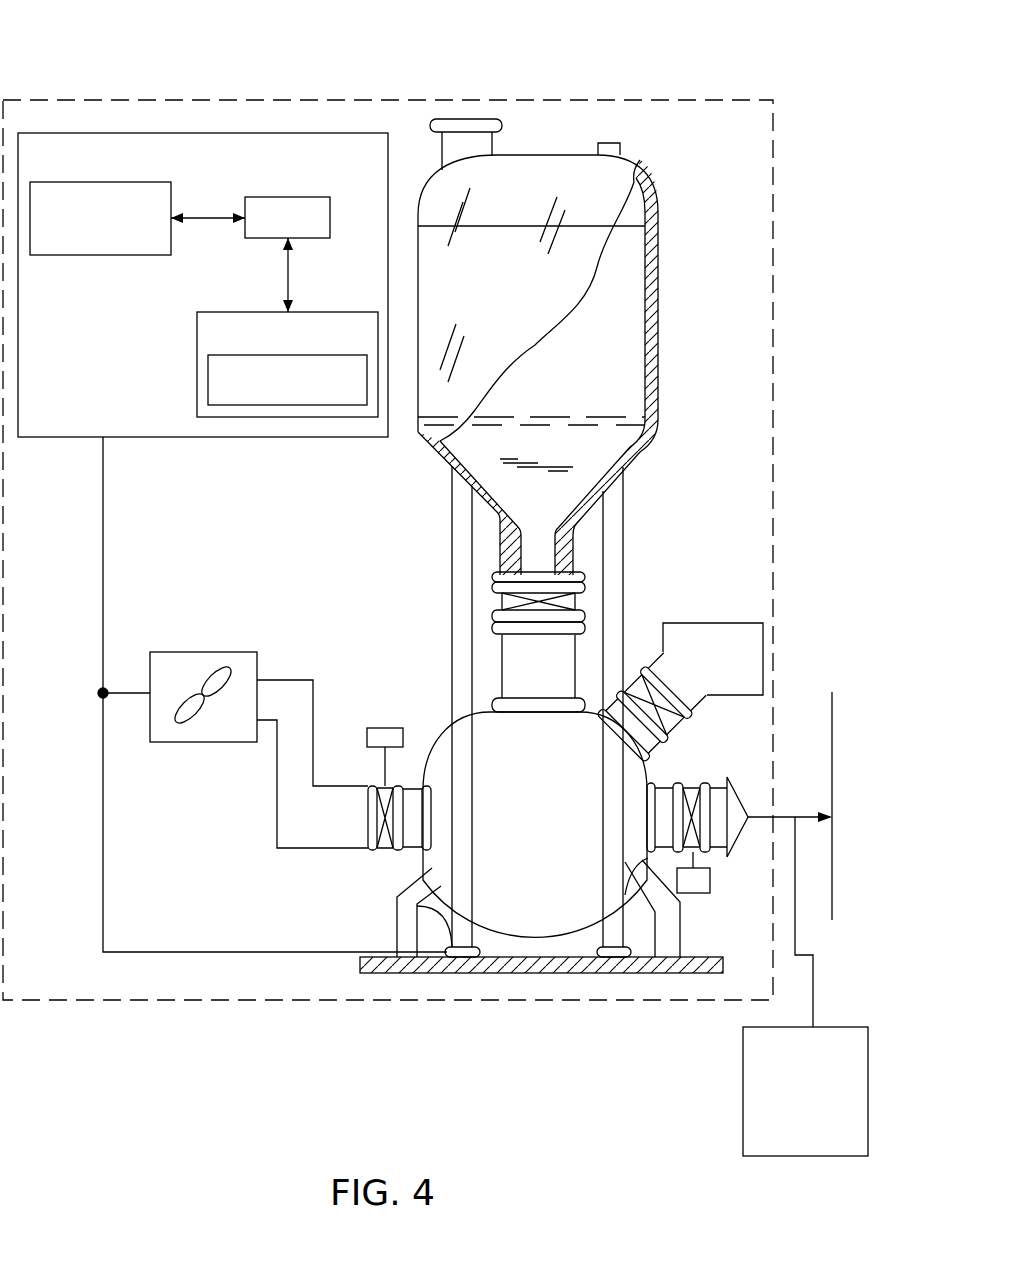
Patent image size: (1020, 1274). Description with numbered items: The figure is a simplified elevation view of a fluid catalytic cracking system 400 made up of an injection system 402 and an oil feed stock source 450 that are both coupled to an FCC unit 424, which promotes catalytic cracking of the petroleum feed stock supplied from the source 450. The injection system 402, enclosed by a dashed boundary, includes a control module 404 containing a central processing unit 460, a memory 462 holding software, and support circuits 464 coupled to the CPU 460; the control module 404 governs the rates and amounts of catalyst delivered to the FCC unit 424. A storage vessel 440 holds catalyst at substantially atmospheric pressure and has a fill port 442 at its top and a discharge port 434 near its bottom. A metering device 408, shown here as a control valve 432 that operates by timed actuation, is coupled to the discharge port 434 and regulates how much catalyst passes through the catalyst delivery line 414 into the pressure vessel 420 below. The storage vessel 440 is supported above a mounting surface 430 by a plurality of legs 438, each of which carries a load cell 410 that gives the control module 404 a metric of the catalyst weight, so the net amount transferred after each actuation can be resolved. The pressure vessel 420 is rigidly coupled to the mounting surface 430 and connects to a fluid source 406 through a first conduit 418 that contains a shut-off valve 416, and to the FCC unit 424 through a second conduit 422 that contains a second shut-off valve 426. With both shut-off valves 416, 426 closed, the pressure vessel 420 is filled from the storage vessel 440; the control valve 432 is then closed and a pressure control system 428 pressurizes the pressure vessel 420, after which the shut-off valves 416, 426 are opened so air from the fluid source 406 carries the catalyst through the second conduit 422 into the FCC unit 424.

The fluid catalytic cracking system 400 is at (174, 76).
The injection system 402 is at (272, 96).
The control module 404 is at (172, 437).
The fluid source 406 is at (237, 652).
The metering device 408 is at (484, 574).
The load cells 410 is at (411, 897).
The catalyst delivery line 414 is at (502, 666).
The shut-off valve 416 is at (385, 728).
The first conduit 418 is at (336, 849).
The pressure vessel 420 is at (560, 828).
The second conduit 422 is at (723, 856).
The FCC unit 424 is at (822, 806).
The second shut-off valve 426 is at (690, 783).
The pressure control system 428 is at (752, 663).
The mounting surface 430 is at (568, 975).
The control valve 432 is at (578, 600).
The discharge port 434 is at (586, 570).
The legs 438 is at (625, 494).
The storage vessel 440 is at (668, 300).
The fill port 442 is at (466, 118).
The oil feed stock source 450 is at (743, 1090).
The central processing unit 460 is at (305, 197).
The memory 462 is at (197, 370).
The support circuits 464 is at (103, 256).